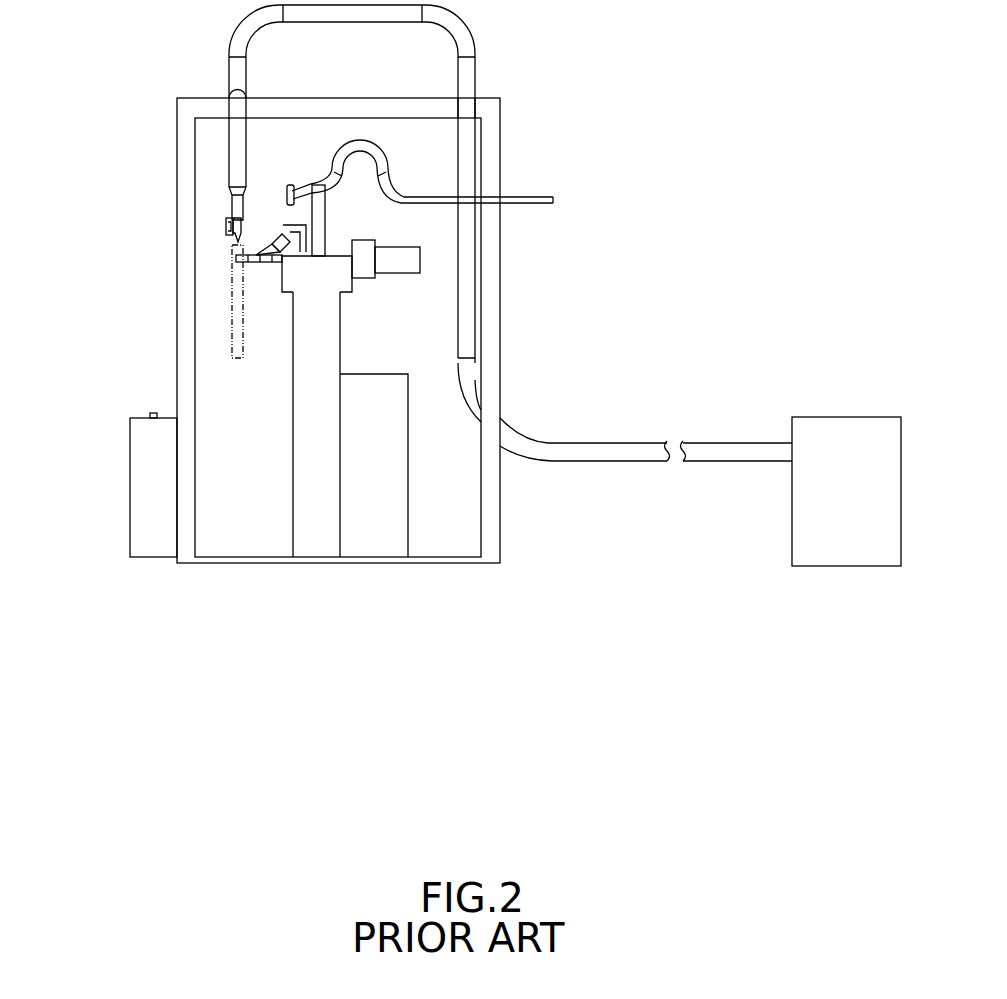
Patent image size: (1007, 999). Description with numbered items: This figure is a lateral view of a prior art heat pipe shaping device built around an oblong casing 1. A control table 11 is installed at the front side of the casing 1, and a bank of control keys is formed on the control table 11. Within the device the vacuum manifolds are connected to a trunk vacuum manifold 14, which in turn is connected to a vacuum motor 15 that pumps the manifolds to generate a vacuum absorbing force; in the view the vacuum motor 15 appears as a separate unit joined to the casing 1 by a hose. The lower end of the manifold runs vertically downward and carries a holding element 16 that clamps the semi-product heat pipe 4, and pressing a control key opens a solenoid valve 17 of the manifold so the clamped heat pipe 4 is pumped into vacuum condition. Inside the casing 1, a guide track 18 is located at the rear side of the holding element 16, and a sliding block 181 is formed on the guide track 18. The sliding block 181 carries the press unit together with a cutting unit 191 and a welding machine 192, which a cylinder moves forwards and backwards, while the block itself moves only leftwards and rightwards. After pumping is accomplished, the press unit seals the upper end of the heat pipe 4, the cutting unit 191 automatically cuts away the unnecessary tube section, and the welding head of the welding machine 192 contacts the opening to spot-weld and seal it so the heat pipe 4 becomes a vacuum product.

The casing 1 is at (655, 204).
The heat pipe 4 is at (232, 305).
The control table 11 is at (150, 490).
The trunk vacuum manifold 14 is at (236, 150).
The vacuum motor 15 is at (833, 430).
The holding element 16 is at (234, 242).
The solenoid valve 17 is at (226, 228).
The guide track 18 is at (315, 450).
The sliding block 181 is at (338, 272).
The cutting unit 191 is at (265, 250).
The welding machine 192 is at (305, 190).